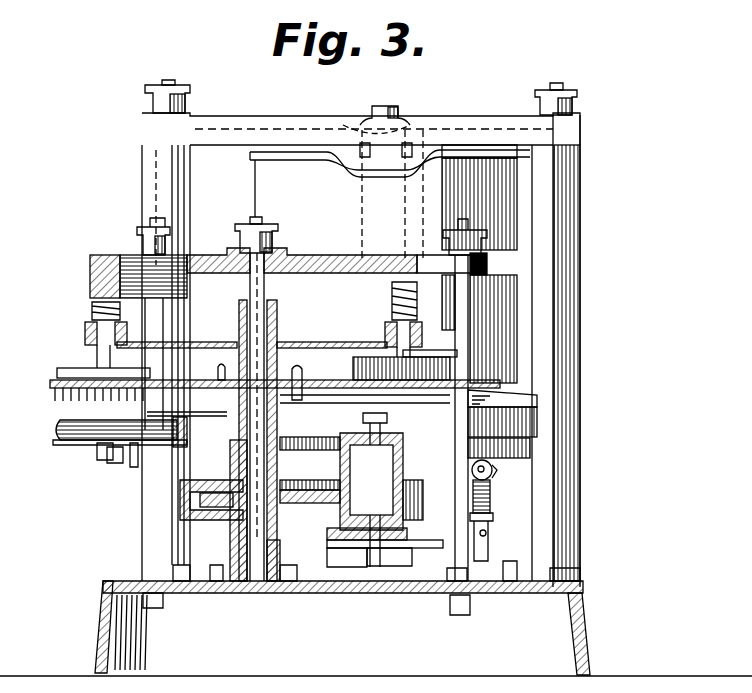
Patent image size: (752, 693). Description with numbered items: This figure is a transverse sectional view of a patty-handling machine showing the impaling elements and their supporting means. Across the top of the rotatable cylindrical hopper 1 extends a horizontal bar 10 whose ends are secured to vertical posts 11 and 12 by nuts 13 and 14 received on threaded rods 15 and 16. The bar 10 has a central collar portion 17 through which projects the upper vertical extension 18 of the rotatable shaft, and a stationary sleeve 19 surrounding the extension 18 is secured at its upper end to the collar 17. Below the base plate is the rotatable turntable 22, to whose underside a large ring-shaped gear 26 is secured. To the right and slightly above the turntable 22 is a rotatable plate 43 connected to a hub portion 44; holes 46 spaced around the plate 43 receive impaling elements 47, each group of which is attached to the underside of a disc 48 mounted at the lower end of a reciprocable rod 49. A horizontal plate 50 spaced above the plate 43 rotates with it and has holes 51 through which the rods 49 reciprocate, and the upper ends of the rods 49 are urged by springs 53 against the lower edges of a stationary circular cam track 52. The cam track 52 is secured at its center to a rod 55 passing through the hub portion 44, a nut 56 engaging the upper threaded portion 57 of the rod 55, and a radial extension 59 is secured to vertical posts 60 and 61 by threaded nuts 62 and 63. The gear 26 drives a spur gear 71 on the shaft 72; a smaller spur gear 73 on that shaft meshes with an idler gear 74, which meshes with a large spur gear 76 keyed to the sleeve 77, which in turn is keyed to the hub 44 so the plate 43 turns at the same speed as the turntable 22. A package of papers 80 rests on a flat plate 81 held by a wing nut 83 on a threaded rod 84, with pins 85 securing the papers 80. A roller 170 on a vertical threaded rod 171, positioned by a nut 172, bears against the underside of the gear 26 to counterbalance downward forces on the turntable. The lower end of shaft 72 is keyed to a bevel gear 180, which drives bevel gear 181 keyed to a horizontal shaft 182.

The rotatable cylindrical hopper 1 is at (258, 181).
The horizontal bar 10 is at (487, 122).
The vertical post 11 is at (145, 184).
The vertical post 12 is at (580, 193).
The nut 13 is at (147, 101).
The nut 14 is at (578, 101).
The threaded rod 15 is at (168, 80).
The threaded rod 16 is at (556, 83).
The central collar portion 17 is at (415, 123).
The upper vertical extension 18 is at (382, 106).
The stationary sleeve 19 is at (415, 172).
The rotatable turntable 22 is at (545, 429).
The ring-shaped gear 26 is at (540, 451).
The rotatable plate 43 is at (312, 380).
The hub portion 44 is at (221, 365).
The holes 46 is at (58, 391).
The impaling element 47 is at (357, 382).
The disc 48 is at (60, 369).
The reciprocable rod 49 is at (97, 357).
The horizontal plate 50 is at (200, 342).
The holes 51 is at (85, 332).
The circular cam track 52 is at (90, 273).
The spring 53 is at (92, 313).
The rod 55 is at (256, 594).
The nut 56 is at (279, 241).
The upper threaded portion 57 is at (263, 221).
The radial extension 59 is at (488, 267).
The vertical post 60 is at (165, 323).
The vertical post 61 is at (470, 307).
The threaded nut 62 is at (138, 244).
The threaded nut 63 is at (472, 241).
The spur gear 71 is at (385, 442).
The shaft 72 is at (341, 471).
The smaller spur gear 73 is at (416, 487).
The idler gear 74 is at (332, 530).
The large spur gear 76 is at (195, 521).
The sleeve 77 is at (232, 459).
The package of papers 80 is at (58, 422).
The flat plate 81 is at (60, 442).
The wing nut 83 is at (97, 456).
The threaded rod 84 is at (112, 464).
The pins 85 is at (134, 468).
The roller 170 is at (497, 470).
The vertical threaded rod 171 is at (492, 503).
The nut 172 is at (494, 523).
The bevel gear 180 is at (388, 567).
The bevel gear 181 is at (346, 568).
The horizontal shaft 182 is at (430, 549).